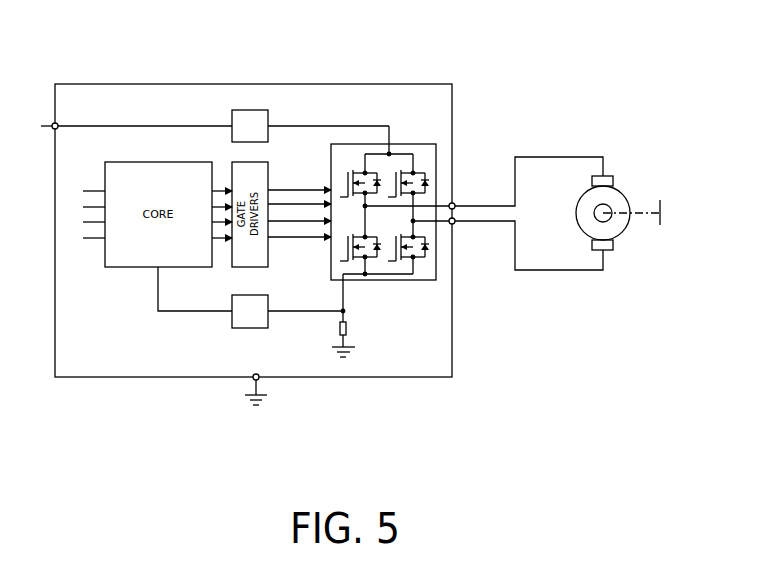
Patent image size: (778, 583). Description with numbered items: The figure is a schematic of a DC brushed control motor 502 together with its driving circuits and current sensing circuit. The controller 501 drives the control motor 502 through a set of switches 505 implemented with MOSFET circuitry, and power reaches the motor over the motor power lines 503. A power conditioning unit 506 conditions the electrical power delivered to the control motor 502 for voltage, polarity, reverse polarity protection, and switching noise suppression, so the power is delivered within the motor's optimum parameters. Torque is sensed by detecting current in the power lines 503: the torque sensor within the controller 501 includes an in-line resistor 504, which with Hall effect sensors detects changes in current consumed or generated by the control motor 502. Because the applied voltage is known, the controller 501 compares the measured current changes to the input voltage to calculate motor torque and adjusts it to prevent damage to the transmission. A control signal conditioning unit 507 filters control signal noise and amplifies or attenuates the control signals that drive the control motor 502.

The controller 501 is at (112, 84).
The control motor 502 is at (620, 188).
The motor power lines 503 is at (516, 200).
The in-line resistor 504 is at (349, 328).
The set of switches 505 is at (352, 144).
The power conditioning unit 506 is at (240, 110).
The control signal conditioning unit 507 is at (232, 318).